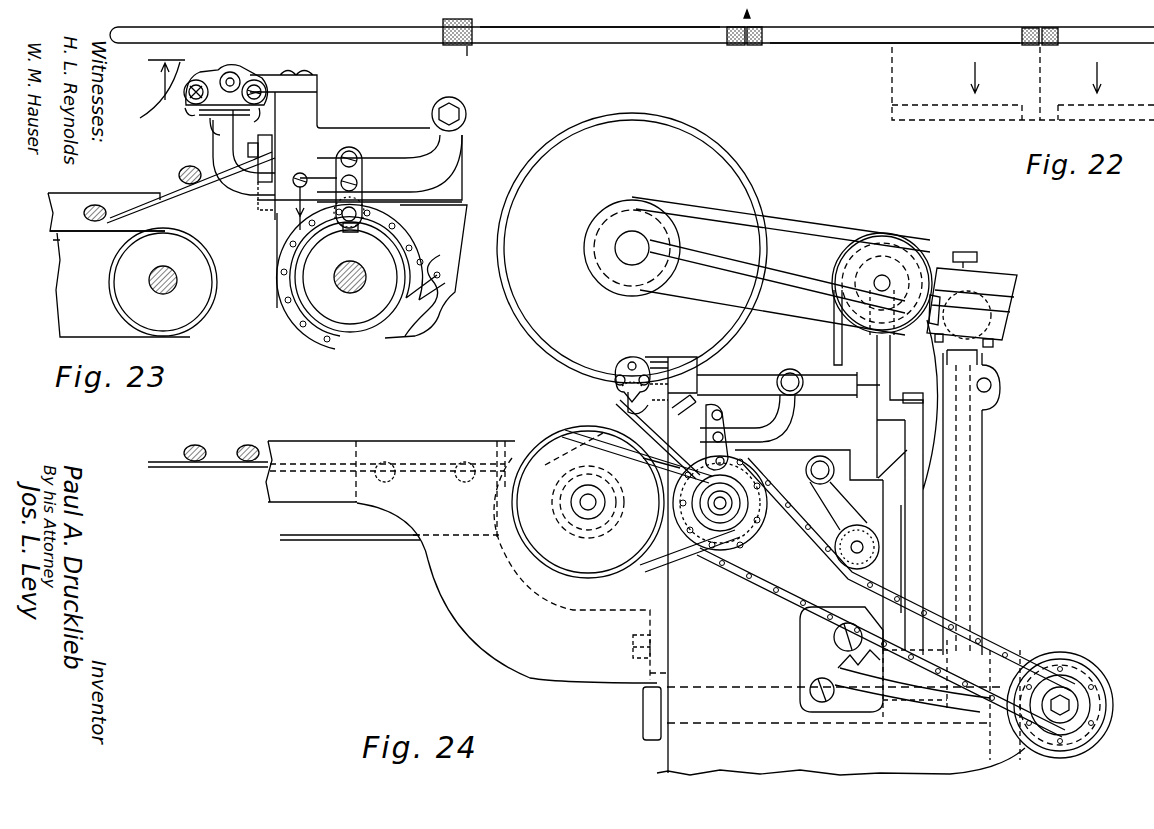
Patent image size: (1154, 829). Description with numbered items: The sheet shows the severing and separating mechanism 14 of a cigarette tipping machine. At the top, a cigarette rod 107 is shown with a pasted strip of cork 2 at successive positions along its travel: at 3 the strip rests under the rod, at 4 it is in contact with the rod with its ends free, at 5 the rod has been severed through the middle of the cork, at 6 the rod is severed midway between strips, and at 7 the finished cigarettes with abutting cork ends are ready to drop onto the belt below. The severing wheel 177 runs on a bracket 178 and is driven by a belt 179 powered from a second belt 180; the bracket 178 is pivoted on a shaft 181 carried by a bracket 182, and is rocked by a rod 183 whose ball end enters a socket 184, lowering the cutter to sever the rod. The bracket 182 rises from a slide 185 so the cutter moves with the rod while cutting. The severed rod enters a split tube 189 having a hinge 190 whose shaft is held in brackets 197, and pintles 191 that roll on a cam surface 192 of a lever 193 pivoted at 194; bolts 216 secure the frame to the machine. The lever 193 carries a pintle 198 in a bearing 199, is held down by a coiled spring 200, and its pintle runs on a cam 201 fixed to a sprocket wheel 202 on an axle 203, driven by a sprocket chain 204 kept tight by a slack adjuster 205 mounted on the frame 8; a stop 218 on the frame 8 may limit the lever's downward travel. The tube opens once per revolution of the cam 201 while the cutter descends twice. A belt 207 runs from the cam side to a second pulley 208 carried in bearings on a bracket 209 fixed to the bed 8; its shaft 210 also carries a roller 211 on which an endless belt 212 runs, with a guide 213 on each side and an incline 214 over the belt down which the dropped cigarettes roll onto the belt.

In FIG. 22, the strip of cork 2 is at (443, 45).
In FIG. 23, the strip of cork 2 is at (151, 80).
In FIG. 23, the strip position under rod 3 is at (160, 97).
In FIG. 22, the strip position in contact with rod 4 is at (467, 56).
In FIG. 22, the rod severed through cork 5 is at (750, 46).
In FIG. 22, the rod severed between strips 6 is at (893, 31).
In FIG. 22, the cigarettes at limit of run 7 is at (1050, 46).
In FIG. 23, the frame 8 is at (362, 236).
In FIG. 24, the frame 8 is at (832, 450).
In FIG. 23, the severing and separating mechanism 14 is at (220, 112).
In FIG. 24, the severing and separating mechanism 14 is at (612, 384).
In FIG. 22, the cigarette rod 107 is at (581, 40).
In FIG. 24, the severing wheel 177 is at (660, 120).
In FIG. 24, the bracket 178 is at (772, 252).
In FIG. 24, the belt 179 is at (848, 222).
In FIG. 24, the second belt 180 is at (833, 343).
In FIG. 24, the shaft 181 is at (885, 275).
In FIG. 24, the bracket 182 is at (907, 487).
In FIG. 24, the rod 183 is at (965, 348).
In FIG. 24, the socket 184 is at (1000, 325).
In FIG. 24, the slide 185 is at (913, 530).
In FIG. 23, the split tube 189 is at (262, 100).
In FIG. 24, the split tube 189 is at (616, 393).
In FIG. 23, the hinge 190 is at (230, 73).
In FIG. 24, the hinge 190 is at (632, 358).
In FIG. 23, the pintles 191 is at (196, 78).
In FIG. 24, the pintles 191 is at (617, 372).
In FIG. 23, the cam surface 192 is at (212, 140).
In FIG. 24, the cam surface 192 is at (652, 386).
In FIG. 23, the lever 193 is at (298, 217).
In FIG. 24, the lever 193 is at (743, 424).
In FIG. 23, the pivot 194 is at (445, 114).
In FIG. 24, the pivot 194 is at (783, 380).
In FIG. 24, the brackets 197 is at (661, 360).
In FIG. 23, the pintle 198 is at (344, 242).
In FIG. 23, the bearing 199 is at (364, 190).
In FIG. 24, the bearing 199 is at (752, 452).
In FIG. 23, the coiled spring 200 is at (298, 236).
In FIG. 24, the coiled spring 200 is at (644, 458).
In FIG. 23, the cam 201 is at (350, 278).
In FIG. 24, the cam 201 is at (800, 486).
In FIG. 23, the sprocket wheel 202 is at (385, 330).
In FIG. 24, the sprocket wheel 202 is at (748, 542).
In FIG. 23, the axle 203 is at (334, 277).
In FIG. 24, the axle 203 is at (710, 545).
In FIG. 24, the sprocket chain 204 is at (762, 585).
In FIG. 24, the slack adjuster 205 is at (857, 524).
In FIG. 24, the belt 207 is at (655, 566).
In FIG. 24, the second pulley 208 is at (552, 560).
In FIG. 24, the bracket 209 is at (507, 593).
In FIG. 23, the shaft 210 is at (165, 293).
In FIG. 24, the shaft 210 is at (575, 503).
In FIG. 23, the roller 211 is at (113, 310).
In FIG. 23, the endless belt 212 is at (120, 284).
In FIG. 24, the endless belt 212 is at (188, 468).
In FIG. 23, the guide 213 is at (75, 200).
In FIG. 24, the guide 213 is at (409, 445).
In FIG. 23, the incline 214 is at (240, 182).
In FIG. 24, the incline 214 is at (648, 439).
In FIG. 23, the bolts 216 is at (268, 160).
In FIG. 24, the stop 218 is at (687, 406).